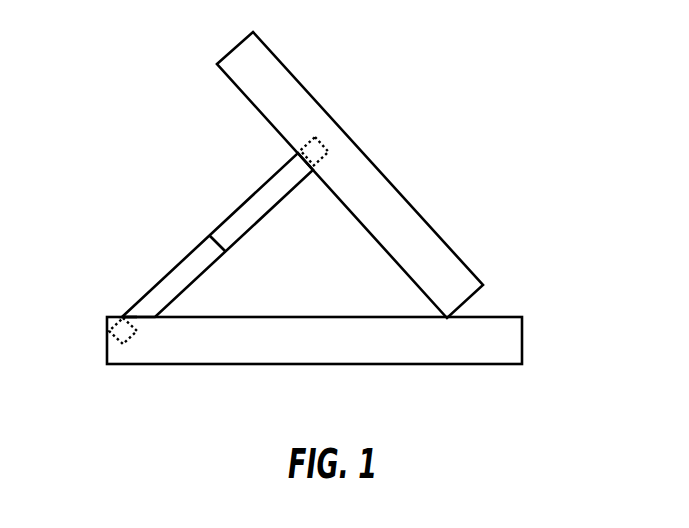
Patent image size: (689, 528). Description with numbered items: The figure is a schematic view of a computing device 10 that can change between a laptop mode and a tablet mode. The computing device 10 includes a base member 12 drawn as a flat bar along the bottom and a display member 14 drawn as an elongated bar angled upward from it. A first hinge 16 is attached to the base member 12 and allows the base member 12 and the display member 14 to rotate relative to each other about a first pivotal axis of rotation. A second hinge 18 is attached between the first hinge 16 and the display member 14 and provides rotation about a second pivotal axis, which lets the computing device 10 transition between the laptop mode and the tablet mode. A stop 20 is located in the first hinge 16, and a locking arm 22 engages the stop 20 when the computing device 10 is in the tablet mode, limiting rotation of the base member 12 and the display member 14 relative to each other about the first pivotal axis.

The computing device 10 is at (410, 45).
The base member 12 is at (491, 317).
The display member 14 is at (235, 93).
The first hinge 16 is at (110, 341).
The second hinge 18 is at (329, 153).
The stop 20 is at (141, 330).
The locking arm 22 is at (121, 316).